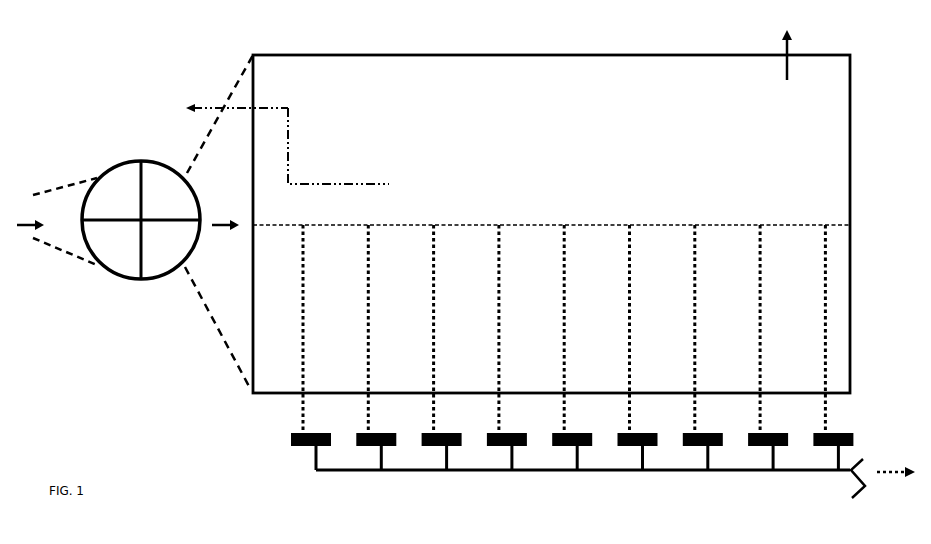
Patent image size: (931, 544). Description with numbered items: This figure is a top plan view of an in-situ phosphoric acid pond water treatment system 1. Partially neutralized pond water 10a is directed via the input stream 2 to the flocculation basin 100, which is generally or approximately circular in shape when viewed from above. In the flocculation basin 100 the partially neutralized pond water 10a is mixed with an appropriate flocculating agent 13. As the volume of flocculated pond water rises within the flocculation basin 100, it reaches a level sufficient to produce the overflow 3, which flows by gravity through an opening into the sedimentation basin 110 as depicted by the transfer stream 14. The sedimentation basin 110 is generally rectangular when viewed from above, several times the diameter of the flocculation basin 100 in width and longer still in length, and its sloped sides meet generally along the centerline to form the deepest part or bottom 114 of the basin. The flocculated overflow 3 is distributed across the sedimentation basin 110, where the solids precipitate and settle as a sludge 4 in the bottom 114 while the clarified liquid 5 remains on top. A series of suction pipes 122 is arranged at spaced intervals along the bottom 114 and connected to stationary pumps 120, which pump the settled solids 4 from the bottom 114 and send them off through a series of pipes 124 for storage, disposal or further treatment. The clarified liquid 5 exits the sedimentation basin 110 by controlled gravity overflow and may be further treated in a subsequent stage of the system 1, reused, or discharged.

The in-situ phosphoric acid pond water treatment system 1 is at (110, 50).
The input stream 2 is at (63, 198).
The overflow 3 is at (287, 222).
The sludge 4 is at (883, 469).
The clarified liquid 5 is at (785, 45).
The partially neutralized pond water 10a is at (53, 221).
The flocculating agent 13 is at (117, 175).
The transfer stream 14 is at (218, 237).
The flocculation basin 100 is at (175, 208).
The sedimentation basin 110 is at (722, 90).
The bottom 114 is at (807, 225).
The stationary pumps 120 is at (291, 438).
The suction pipes 122 is at (300, 406).
The pipes 124 is at (417, 474).